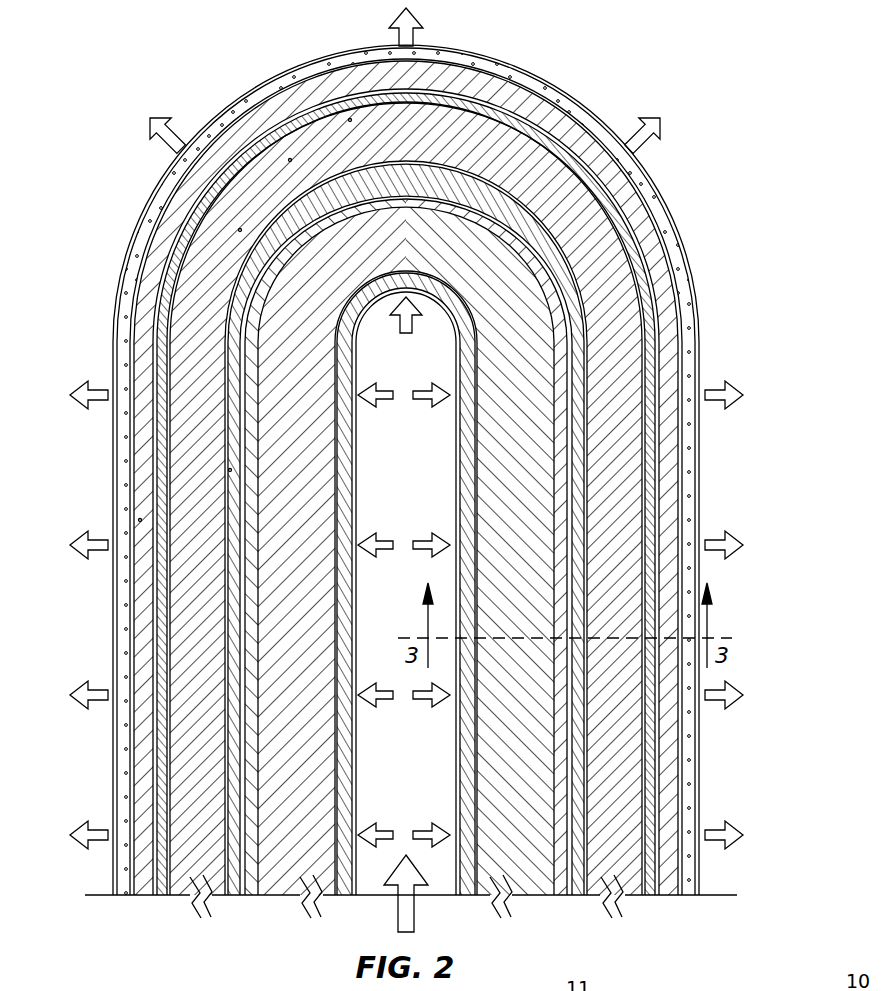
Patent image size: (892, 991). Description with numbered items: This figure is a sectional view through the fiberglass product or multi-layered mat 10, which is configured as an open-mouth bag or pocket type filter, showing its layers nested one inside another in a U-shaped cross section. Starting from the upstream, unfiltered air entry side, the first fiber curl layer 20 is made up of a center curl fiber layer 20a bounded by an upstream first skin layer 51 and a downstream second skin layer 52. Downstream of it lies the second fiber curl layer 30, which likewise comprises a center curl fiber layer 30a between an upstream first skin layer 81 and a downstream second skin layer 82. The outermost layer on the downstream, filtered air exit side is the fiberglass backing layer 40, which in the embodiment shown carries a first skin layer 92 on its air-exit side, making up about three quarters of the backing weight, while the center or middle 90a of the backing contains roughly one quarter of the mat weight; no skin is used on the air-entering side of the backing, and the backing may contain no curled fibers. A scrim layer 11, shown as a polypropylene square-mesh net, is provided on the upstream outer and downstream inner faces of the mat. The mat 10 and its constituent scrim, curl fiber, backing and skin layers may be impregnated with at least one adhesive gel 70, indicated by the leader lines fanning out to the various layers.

The fiberglass product 10 is at (109, 250).
The scrim layer 11 is at (455, 478).
The first fiber curl layer 20 is at (448, 300).
The center curl fiber layer 20a is at (514, 385).
The second fiber curl layer 30 is at (513, 82).
The center curl fiber layer 30a is at (597, 255).
The fiberglass backing layer 40 is at (558, 88).
The first skin layer 51 is at (452, 322).
The second skin layer 52 is at (543, 292).
The adhesive gel 70 is at (248, 165).
The first skin layer 81 is at (526, 198).
The second skin layer 82 is at (648, 222).
The center of the fiberglass backing 90a is at (668, 440).
The first skin layer 92 is at (688, 482).